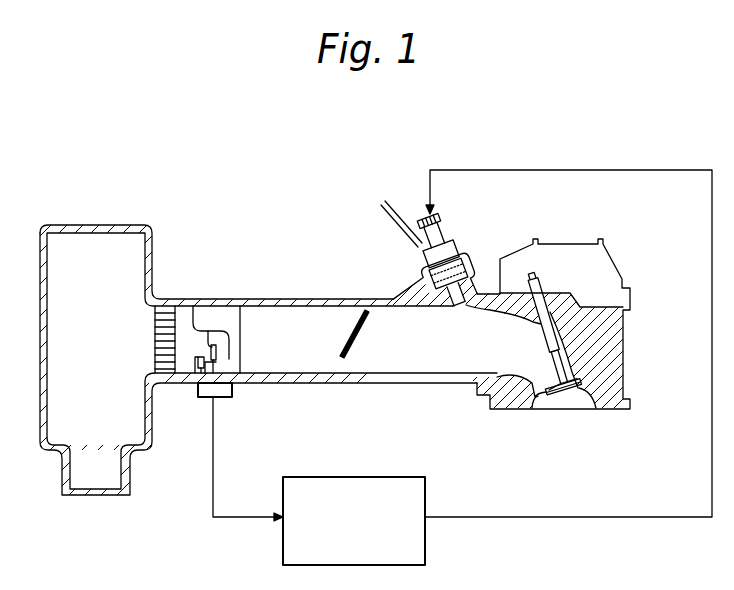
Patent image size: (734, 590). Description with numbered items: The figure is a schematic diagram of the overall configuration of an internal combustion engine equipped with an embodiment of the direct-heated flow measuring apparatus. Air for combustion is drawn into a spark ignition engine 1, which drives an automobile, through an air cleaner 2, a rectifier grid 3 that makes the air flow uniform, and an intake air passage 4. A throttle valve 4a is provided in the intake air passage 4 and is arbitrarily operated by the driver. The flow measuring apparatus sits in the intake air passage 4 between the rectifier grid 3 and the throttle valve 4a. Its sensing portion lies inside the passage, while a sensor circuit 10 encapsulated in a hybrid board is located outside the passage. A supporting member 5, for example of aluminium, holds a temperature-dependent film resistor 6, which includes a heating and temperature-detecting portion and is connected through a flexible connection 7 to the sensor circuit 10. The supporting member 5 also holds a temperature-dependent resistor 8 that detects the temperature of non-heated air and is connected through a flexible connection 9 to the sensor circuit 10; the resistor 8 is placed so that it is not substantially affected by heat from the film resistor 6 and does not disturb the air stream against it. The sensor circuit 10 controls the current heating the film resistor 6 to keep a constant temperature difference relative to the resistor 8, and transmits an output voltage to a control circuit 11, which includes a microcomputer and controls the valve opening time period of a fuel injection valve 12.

The spark ignition engine 1 is at (624, 350).
The air cleaner 2 is at (97, 236).
The rectifier grid 3 is at (177, 318).
The intake air passage 4 is at (312, 366).
The throttle valve 4a is at (370, 326).
The supporting member 5 is at (243, 320).
The temperature-dependent resistor (film resistor) 6 is at (218, 322).
The flexible connection 7 is at (216, 363).
The temperature-dependent resistor 8 is at (199, 366).
The flexible connection 9 is at (206, 379).
The sensor circuit 10 is at (243, 403).
The control circuit 11 is at (362, 477).
The fuel injection valve 12 is at (438, 233).